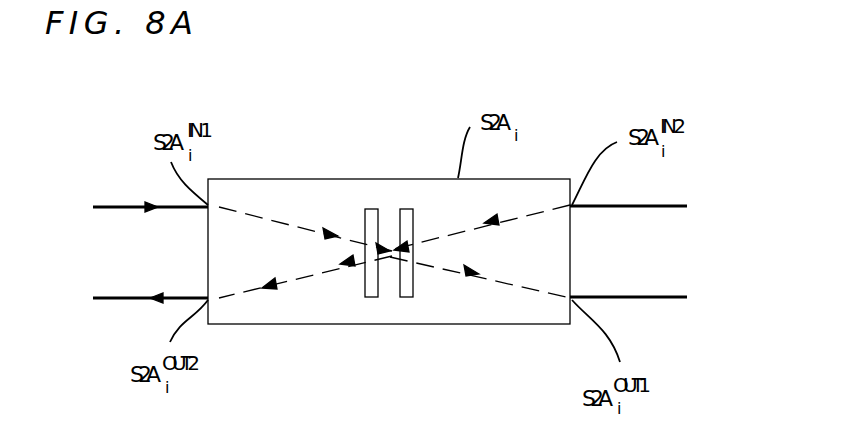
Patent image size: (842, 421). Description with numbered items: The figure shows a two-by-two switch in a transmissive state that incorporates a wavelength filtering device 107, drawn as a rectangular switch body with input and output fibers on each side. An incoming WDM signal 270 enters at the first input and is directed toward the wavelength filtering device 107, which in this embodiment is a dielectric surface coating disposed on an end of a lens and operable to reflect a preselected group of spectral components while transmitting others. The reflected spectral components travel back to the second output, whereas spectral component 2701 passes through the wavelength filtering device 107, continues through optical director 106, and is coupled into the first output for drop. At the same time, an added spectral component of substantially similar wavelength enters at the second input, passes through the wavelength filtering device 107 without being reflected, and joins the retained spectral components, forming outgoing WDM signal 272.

The WDM signal 270 is at (152, 204).
The WDM signal 272 is at (160, 300).
The wavelength filtering device 107 is at (371, 208).
The optical director 106 is at (410, 208).
The spectral component 2701 is at (446, 268).